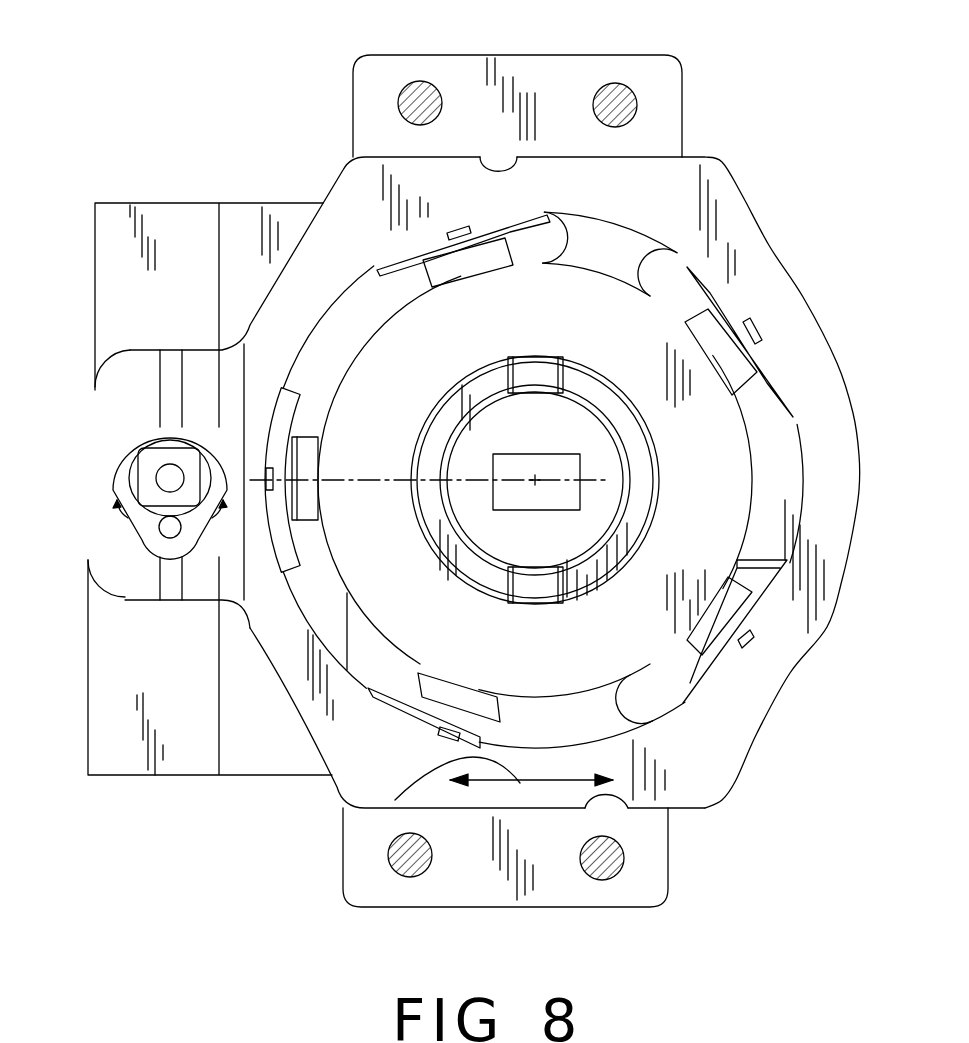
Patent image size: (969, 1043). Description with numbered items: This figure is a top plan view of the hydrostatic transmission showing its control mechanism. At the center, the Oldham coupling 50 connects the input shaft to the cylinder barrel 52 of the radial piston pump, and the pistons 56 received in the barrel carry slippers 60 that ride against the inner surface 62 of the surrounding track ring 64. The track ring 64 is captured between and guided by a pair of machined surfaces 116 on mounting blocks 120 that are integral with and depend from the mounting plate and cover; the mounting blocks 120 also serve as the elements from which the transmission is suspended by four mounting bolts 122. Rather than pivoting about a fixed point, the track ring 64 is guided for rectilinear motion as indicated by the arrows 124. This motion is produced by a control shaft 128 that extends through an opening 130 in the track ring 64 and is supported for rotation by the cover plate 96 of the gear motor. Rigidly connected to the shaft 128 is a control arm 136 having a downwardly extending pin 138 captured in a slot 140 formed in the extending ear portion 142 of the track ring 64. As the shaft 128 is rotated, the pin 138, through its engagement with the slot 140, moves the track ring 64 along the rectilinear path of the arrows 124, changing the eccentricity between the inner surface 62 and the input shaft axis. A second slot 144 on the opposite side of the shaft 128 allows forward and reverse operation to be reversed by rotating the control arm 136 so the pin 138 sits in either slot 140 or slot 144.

The Oldham coupling 50 is at (535, 592).
The cylinder barrel 52 is at (450, 547).
The pistons 56 is at (308, 492).
The slippers 60 is at (410, 250).
The inner surface 62 is at (787, 430).
The track ring 64 is at (727, 175).
The cover plate 96 is at (127, 742).
The machined surfaces 116 is at (482, 160).
The mounting blocks 120 is at (672, 85).
The mounting bolts 122 is at (615, 83).
The arrows 124 is at (395, 800).
The shaft 128 is at (152, 462).
The opening 130 is at (123, 447).
The control arm 136 is at (123, 483).
The pin 138 is at (166, 528).
The slot 140 is at (165, 585).
The ear portion 142 is at (125, 350).
The second slot 144 is at (163, 370).